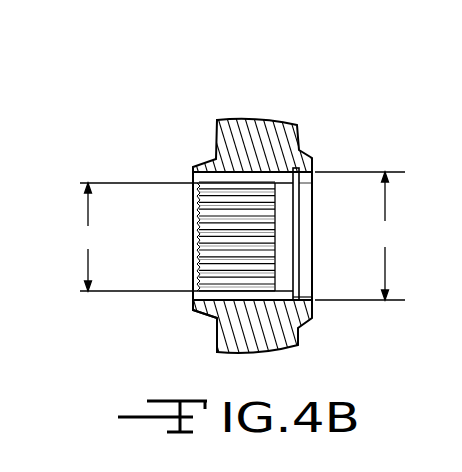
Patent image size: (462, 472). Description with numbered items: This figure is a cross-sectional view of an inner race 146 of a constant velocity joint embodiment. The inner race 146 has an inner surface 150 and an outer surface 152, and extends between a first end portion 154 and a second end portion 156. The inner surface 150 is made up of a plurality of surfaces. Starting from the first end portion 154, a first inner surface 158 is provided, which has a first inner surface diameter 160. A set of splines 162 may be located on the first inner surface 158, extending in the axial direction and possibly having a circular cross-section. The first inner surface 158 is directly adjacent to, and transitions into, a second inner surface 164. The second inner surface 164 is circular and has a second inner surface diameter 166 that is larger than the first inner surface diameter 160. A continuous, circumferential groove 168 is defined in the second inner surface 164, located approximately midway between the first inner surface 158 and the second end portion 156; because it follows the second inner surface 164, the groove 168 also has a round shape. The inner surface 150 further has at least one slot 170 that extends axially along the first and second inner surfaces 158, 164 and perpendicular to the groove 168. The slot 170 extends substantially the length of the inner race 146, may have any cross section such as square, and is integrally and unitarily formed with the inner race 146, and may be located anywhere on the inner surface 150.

The inner race 146 is at (263, 120).
The inner surface 150 is at (220, 238).
The outer surface 152 is at (225, 108).
The first end portion 154 is at (200, 318).
The second end portion 156 is at (308, 330).
The first inner surface 158 is at (223, 294).
The first inner surface diameter 160 is at (132, 237).
The set of splines 162 is at (215, 212).
The second inner surface 164 is at (304, 180).
The second inner surface diameter 166 is at (360, 236).
The groove 168 is at (300, 238).
The slot 170 is at (313, 298).